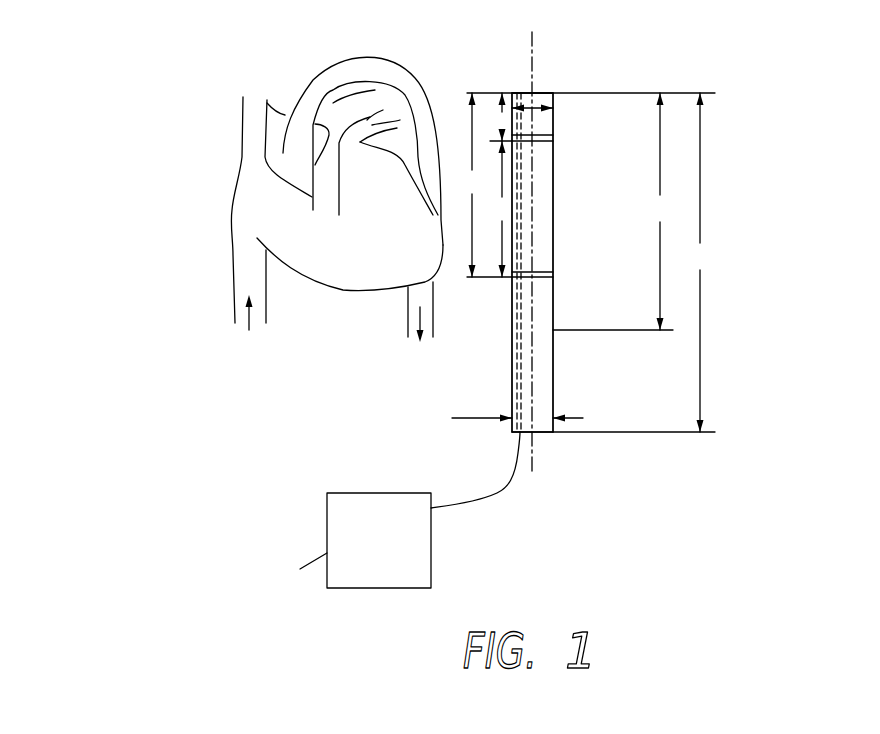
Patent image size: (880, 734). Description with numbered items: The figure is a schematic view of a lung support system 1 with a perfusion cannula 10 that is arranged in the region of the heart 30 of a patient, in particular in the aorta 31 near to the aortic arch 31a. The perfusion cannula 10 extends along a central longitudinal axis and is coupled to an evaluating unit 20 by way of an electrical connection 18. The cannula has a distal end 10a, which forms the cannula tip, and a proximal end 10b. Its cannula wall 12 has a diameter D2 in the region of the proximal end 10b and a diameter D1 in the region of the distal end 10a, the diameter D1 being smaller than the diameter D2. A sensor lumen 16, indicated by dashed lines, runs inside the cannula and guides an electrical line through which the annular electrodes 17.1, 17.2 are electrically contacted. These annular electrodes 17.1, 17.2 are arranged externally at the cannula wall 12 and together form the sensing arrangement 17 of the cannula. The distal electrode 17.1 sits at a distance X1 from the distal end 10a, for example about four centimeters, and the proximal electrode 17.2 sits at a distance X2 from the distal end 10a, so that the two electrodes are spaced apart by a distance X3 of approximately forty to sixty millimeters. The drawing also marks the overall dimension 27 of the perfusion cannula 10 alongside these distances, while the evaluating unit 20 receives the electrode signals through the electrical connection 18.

The lung support system 1 is at (290, 392).
The perfusion cannula 10 is at (580, 82).
The distal end 10a is at (522, 95).
The proximal end 10b is at (545, 432).
The cannula wall 12 is at (555, 373).
The sensor lumen 16 is at (519, 361).
The sensor section 17 is at (580, 486).
The distal electrode 17.1 is at (553, 140).
The proximal electrode 17.2 is at (553, 276).
The electrical connection 18 is at (512, 483).
The evaluating unit 20 is at (259, 540).
The catheter length 27 is at (634, 262).
The heart 30 is at (210, 115).
The aorta 31 is at (430, 296).
The aortic arch 31a is at (383, 75).
The diameter D1 is at (533, 100).
The diameter D2 is at (517, 407).
The distance X1 is at (489, 117).
The distance X2 is at (469, 185).
The distance X3 is at (495, 209).